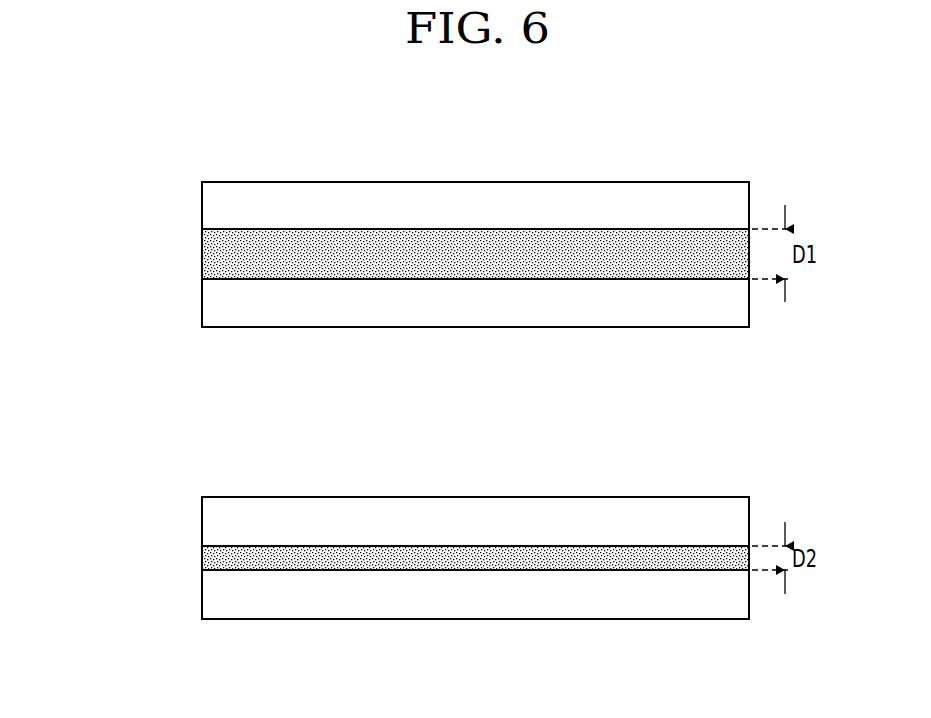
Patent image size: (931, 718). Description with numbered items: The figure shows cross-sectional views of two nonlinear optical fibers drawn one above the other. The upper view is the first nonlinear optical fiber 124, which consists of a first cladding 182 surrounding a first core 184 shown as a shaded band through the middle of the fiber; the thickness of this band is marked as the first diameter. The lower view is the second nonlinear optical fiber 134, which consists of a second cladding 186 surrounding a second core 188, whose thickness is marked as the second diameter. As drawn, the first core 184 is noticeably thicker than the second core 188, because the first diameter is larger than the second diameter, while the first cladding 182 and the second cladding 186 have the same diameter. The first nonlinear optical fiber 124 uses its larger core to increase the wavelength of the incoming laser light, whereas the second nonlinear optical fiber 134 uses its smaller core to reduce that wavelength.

The first nonlinear optical fiber 124 is at (401, 254).
The first cladding 182 is at (211, 205).
The first core 184 is at (211, 255).
The second nonlinear optical fiber 134 is at (401, 558).
The second cladding 186 is at (211, 521).
The second core 188 is at (211, 556).